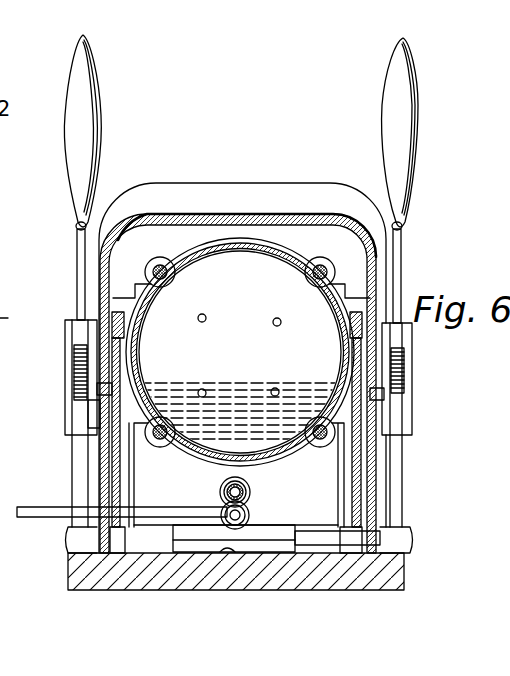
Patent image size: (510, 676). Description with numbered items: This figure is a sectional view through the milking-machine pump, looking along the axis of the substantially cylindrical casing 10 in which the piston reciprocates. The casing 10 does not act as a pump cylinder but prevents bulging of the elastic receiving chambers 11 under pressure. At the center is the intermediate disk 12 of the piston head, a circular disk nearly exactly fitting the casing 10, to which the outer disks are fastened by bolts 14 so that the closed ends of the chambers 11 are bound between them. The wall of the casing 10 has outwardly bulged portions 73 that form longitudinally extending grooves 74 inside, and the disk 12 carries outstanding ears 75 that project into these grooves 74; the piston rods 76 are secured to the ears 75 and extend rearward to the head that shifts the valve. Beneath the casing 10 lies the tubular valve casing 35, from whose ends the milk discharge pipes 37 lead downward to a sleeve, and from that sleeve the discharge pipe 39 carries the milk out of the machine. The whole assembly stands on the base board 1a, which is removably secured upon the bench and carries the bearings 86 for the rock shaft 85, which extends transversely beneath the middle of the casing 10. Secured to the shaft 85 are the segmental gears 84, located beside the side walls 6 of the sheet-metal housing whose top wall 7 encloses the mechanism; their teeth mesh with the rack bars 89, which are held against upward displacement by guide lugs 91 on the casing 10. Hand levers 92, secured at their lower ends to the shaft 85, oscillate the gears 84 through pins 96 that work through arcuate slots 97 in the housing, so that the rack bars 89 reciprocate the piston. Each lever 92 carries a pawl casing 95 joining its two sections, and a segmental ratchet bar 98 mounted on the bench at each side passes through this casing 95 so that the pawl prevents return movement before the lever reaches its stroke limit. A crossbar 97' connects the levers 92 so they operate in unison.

The base board 1a is at (212, 590).
The side walls 6 is at (380, 278).
The top wall 7 is at (233, 214).
The casing 10 is at (272, 230).
The receiving chambers 11 is at (241, 255).
The intermediate disk 12 is at (240, 352).
The bolts 14 is at (274, 318).
The valve casing 35 is at (251, 490).
The pipes 37 is at (221, 510).
The discharge pipe 39 is at (40, 515).
The outwardly bulged portions 73 is at (158, 264).
The grooves 74 is at (172, 424).
The ears 75 is at (146, 270).
The piston rods 76 is at (313, 283).
The segmental gears 84 is at (118, 468).
The rock shaft 85 is at (317, 540).
The bearings 86 is at (306, 497).
The rack bars 89 is at (112, 316).
The guide lugs 91 is at (108, 292).
The hand levers 92 is at (86, 182).
The pawl casing 95 is at (66, 340).
The pin 96 is at (68, 383).
The arcuate slots 97 is at (62, 425).
The crossbar 97' is at (242, 339).
The segmental ratchet bar 98 is at (108, 383).